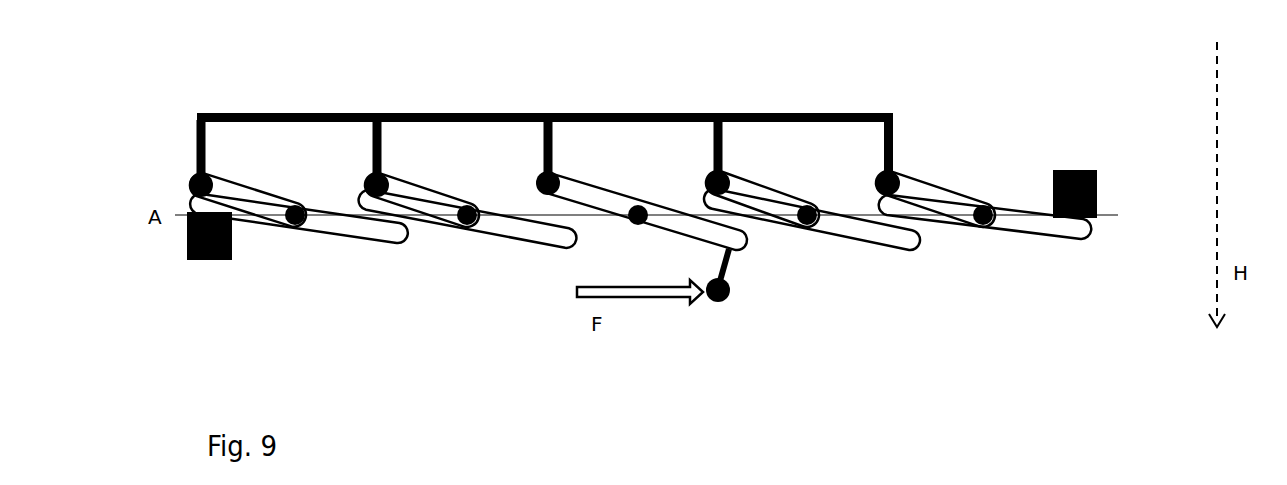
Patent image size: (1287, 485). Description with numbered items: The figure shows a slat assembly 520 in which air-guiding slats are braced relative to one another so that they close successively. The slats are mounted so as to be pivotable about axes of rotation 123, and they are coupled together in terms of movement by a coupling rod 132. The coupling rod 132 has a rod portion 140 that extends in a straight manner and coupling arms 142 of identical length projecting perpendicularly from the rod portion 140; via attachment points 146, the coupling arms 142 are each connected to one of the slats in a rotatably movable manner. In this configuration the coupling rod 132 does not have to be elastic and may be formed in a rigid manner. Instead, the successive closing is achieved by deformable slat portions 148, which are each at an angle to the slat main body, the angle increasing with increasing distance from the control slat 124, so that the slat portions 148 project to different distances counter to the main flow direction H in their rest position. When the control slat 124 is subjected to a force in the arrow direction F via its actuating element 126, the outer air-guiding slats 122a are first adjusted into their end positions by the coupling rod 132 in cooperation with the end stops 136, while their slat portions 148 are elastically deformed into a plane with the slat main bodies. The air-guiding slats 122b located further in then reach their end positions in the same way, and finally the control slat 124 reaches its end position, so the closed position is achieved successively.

The slat assembly 520 is at (966, 101).
The coupling rod 132 is at (484, 95).
The rod portion 140 is at (437, 113).
The coupling arms 142 is at (196, 150).
The attachment points 146 is at (193, 180).
The slat portions 148 is at (240, 182).
The control slat 124 is at (595, 200).
The actuating element 126 is at (708, 292).
The axes of rotation 123 is at (293, 222).
The outer air-guiding slats 122a is at (340, 228).
The air-guiding slats located further in 122b is at (518, 230).
The end stops 136 is at (187, 262).